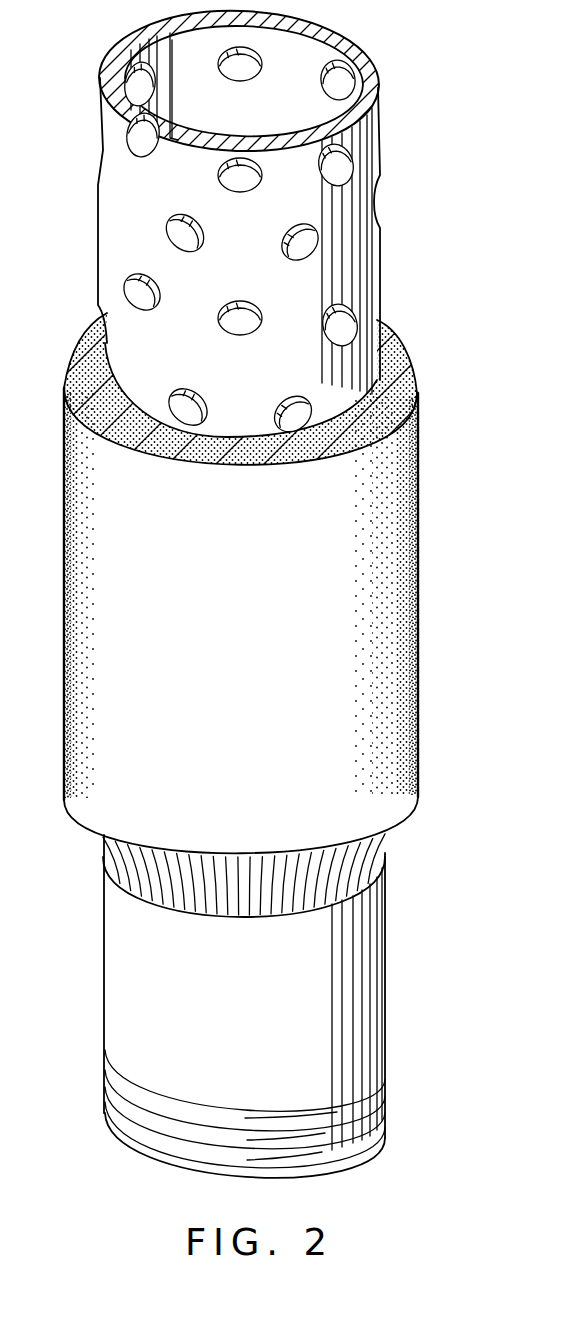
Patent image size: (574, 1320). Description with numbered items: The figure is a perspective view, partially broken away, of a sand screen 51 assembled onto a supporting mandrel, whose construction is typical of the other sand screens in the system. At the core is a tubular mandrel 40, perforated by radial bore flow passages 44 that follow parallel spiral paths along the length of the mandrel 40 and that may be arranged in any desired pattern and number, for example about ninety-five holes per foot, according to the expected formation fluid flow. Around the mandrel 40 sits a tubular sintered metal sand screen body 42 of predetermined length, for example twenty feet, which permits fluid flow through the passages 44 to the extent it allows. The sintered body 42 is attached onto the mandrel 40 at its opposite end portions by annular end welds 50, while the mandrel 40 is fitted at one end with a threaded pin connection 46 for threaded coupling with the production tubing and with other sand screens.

The tubular mandrel 40 is at (128, 211).
The tubular sand screen body 42 is at (337, 503).
The radial bore flow passages 44 is at (260, 70).
The threaded pin connection 46 is at (125, 1103).
The annular end welds 50 is at (367, 848).
The sand screen 51 is at (420, 183).